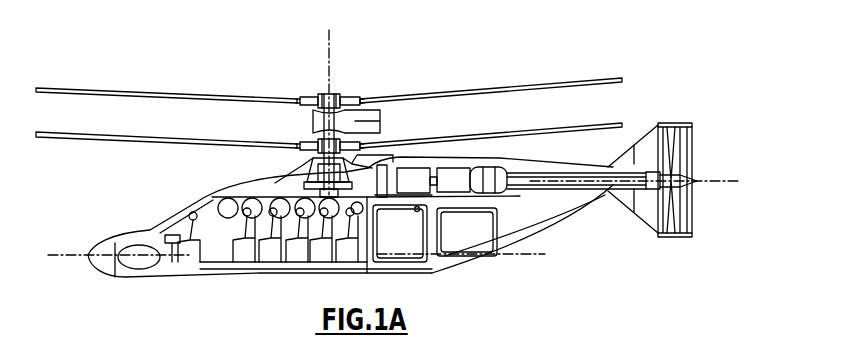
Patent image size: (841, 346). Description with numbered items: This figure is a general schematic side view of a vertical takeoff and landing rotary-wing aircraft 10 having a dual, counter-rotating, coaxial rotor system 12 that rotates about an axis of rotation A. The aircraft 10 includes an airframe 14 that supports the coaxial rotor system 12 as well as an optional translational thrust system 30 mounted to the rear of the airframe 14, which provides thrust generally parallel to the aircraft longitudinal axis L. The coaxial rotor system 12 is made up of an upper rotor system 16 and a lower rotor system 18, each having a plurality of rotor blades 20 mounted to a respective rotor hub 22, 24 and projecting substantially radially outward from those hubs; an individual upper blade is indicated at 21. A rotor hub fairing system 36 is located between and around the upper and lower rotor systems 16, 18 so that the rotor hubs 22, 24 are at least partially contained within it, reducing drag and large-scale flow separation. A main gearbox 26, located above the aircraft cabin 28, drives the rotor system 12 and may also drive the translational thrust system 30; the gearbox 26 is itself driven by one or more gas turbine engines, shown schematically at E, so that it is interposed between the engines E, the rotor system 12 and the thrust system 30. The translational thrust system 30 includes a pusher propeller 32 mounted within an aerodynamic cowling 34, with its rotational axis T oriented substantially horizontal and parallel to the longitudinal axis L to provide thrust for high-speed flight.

The rotary-wing aircraft 10 is at (400, 166).
The coaxial rotor system 12 is at (372, 91).
The airframe 14 is at (230, 187).
The upper rotor system 16 is at (312, 88).
The lower rotor system 18 is at (292, 140).
The rotor blades 20 is at (440, 112).
The upper rotor blade 21 is at (285, 93).
The rotor hub 22 is at (345, 96).
The rotor hub 24 is at (381, 132).
The main gearbox 26 is at (288, 174).
The aircraft cabin 28 is at (278, 260).
The translational thrust system 30 is at (705, 164).
The pusher propeller 32 is at (670, 162).
The aerodynamic cowling 34 is at (672, 126).
The rotor hub fairing system 36 is at (300, 117).
The axis of rotation A is at (333, 45).
The engines E is at (463, 165).
The rotational axis T is at (716, 181).
The aircraft longitudinal axis L is at (538, 256).